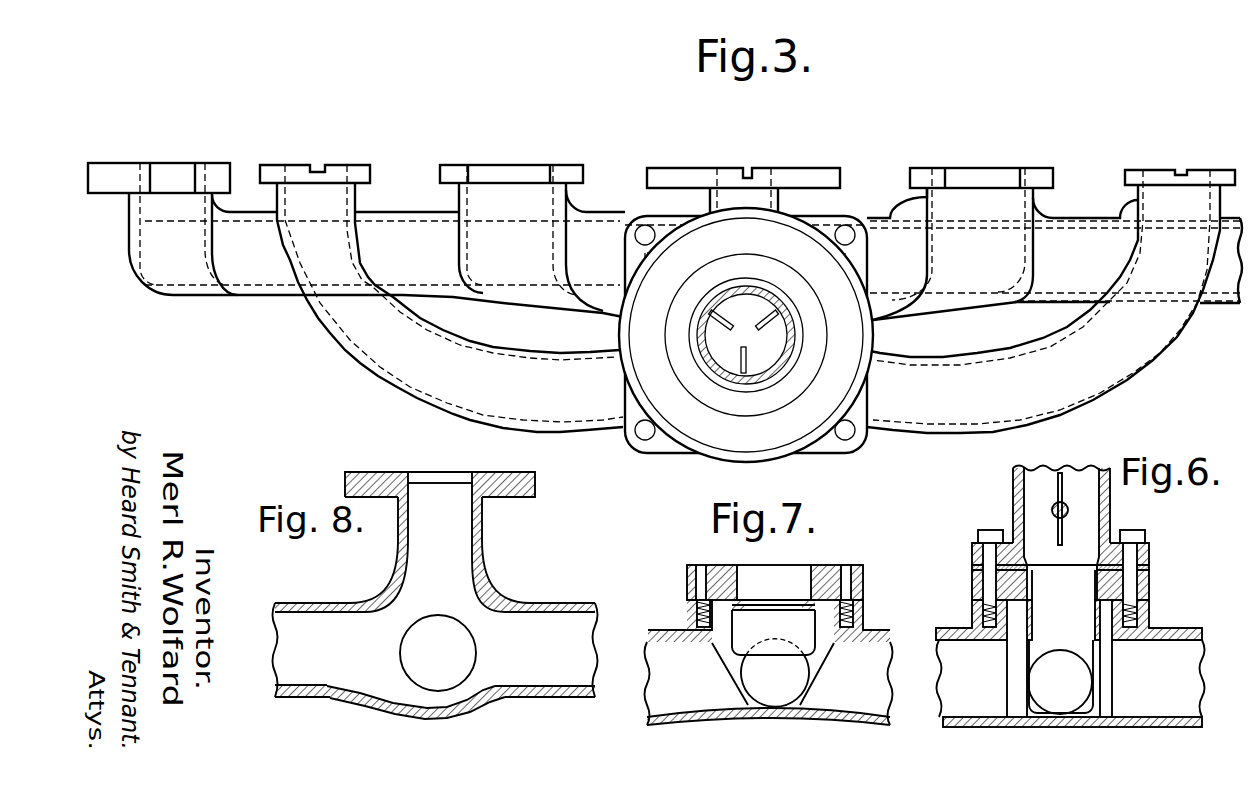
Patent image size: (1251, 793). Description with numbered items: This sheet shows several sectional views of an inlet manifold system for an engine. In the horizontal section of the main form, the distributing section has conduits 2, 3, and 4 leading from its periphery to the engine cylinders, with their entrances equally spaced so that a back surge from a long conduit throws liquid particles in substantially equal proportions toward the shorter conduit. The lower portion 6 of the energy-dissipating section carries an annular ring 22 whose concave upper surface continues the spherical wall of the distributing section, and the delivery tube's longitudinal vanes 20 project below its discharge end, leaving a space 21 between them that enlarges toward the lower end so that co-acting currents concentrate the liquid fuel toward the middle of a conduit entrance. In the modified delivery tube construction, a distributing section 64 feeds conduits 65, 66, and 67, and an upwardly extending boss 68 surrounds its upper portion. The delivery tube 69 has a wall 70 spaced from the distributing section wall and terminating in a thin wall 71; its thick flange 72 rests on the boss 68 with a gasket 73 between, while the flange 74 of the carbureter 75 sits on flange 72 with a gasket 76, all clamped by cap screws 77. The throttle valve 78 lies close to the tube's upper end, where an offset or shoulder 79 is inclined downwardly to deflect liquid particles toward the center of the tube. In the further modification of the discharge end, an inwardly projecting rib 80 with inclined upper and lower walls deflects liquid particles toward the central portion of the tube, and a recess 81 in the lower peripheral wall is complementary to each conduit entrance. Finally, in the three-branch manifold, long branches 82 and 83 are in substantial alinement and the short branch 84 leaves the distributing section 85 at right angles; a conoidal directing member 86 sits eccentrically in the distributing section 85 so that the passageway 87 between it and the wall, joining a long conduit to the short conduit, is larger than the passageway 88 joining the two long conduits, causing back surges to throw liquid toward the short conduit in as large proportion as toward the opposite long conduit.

In FIG. 3, the conduit 2 is at (1080, 381).
In FIG. 3, the conduit 3 is at (437, 383).
In FIG. 3, the conduit 4 is at (768, 188).
In FIG. 3, the lower portion of the energy-dissipating section 6 is at (697, 451).
In FIG. 3, the longitudinal vanes 20 is at (747, 363).
In FIG. 3, the space 21 is at (745, 345).
In FIG. 3, the annular ring 22 is at (805, 288).
In FIG. 6, the distributing section 64 is at (1018, 702).
In FIG. 6, the conduit 65 is at (1173, 653).
In FIG. 6, the conduit 66 is at (973, 670).
In FIG. 6, the conduit 67 is at (1085, 678).
In FIG. 6, the boss 68 is at (1149, 617).
In FIG. 6, the delivery tube 69 is at (1092, 602).
In FIG. 6, the wall 70 is at (1090, 630).
In FIG. 6, the thin wall 71 is at (1093, 640).
In FIG. 6, the flange 72 is at (1149, 580).
In FIG. 6, the gasket 73 is at (1149, 598).
In FIG. 6, the flange 74 is at (1149, 548).
In FIG. 6, the carbureter 75 is at (1107, 515).
In FIG. 6, the gasket 76 is at (1149, 567).
In FIG. 6, the cap screws 77 is at (988, 530).
In FIG. 6, the throttle valve 78 is at (1062, 504).
In FIG. 6, the offset or shoulder 79 is at (1098, 565).
In FIG. 7, the inwardly projecting rib 80 is at (805, 607).
In FIG. 7, the recess 81 is at (773, 647).
In FIG. 8, the long branch 82 is at (553, 625).
In FIG. 8, the long branch 83 is at (308, 618).
In FIG. 8, the short branch 84 is at (457, 538).
In FIG. 8, the distributing section 85 is at (392, 648).
In FIG. 8, the directing member 86 is at (470, 657).
In FIG. 8, the passageway 87 is at (387, 603).
In FIG. 8, the passageway 88 is at (443, 702).